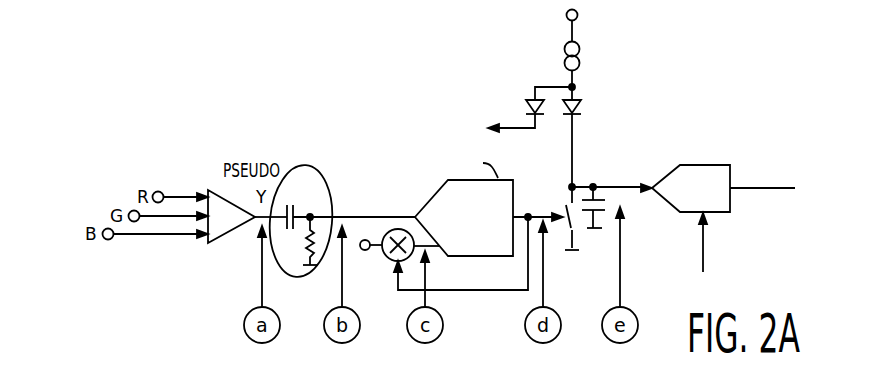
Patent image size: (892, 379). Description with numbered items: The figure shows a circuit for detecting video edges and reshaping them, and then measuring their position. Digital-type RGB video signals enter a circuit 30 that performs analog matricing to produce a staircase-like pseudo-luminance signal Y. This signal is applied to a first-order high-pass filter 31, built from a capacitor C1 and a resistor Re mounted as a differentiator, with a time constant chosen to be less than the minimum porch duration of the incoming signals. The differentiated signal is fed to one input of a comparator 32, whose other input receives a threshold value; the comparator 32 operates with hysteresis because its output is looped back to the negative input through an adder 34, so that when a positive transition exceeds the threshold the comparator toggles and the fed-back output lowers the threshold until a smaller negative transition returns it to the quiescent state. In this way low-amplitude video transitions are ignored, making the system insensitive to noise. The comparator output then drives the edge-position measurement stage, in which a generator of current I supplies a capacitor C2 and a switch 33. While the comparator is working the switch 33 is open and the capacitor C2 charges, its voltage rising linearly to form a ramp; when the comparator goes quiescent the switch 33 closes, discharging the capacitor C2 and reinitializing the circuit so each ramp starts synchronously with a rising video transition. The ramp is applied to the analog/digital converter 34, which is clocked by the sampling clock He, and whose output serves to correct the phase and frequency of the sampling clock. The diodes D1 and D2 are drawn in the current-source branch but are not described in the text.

The analog matricing circuit 30 is at (228, 246).
The first-order high-pass filter 31 is at (322, 168).
The comparator 32 is at (495, 258).
The switch 33 is at (574, 258).
The adder and analog/digital converter 34 is at (383, 261).
The capacitor C1 is at (297, 208).
The resistor Re is at (302, 237).
The capacitor C2 is at (602, 185).
The diode D1 is at (581, 107).
The diode D2 is at (528, 107).
The current generator I is at (578, 52).
The sampling clock He is at (705, 248).